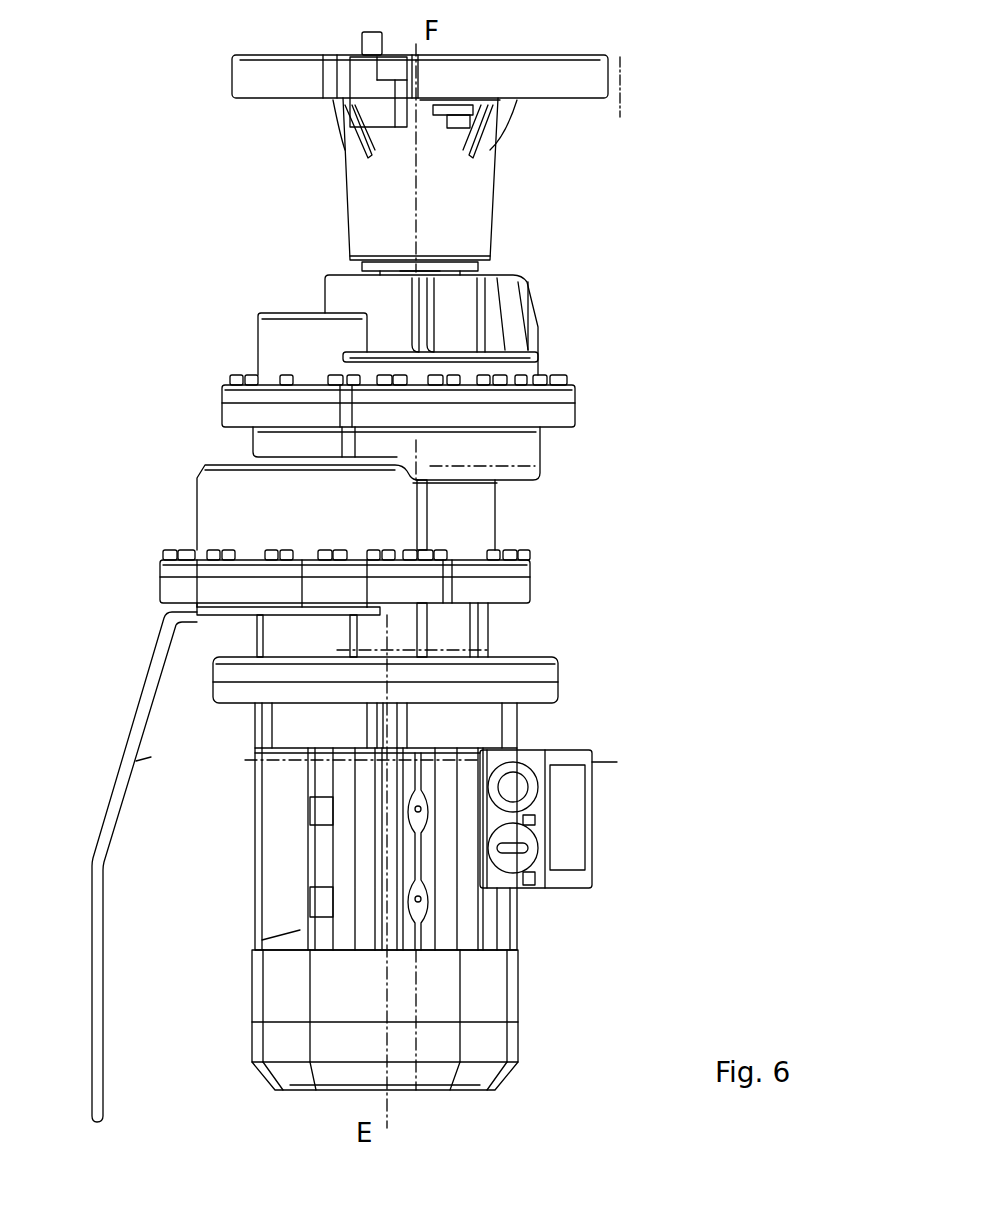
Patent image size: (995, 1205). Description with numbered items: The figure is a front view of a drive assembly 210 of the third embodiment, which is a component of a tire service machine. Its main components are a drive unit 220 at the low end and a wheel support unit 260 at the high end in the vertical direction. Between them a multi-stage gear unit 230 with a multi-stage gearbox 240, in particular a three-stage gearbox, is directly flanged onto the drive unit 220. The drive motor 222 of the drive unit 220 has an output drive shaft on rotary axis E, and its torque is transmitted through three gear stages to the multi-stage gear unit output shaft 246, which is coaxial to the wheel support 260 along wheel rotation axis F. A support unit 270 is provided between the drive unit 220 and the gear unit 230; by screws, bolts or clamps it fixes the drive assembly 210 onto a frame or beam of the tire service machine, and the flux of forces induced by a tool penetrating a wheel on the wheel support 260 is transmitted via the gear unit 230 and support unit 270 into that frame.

The drive assembly 210 is at (86, 57).
The drive unit 220 is at (530, 1009).
The drive motor 222 is at (430, 927).
The multi-stage gear unit 230 is at (606, 555).
The multi-stage gearbox 240 is at (380, 520).
The multi-stage gear unit output shaft 246 is at (432, 268).
The wheel support unit 260 is at (632, 100).
The support unit 270 is at (150, 724).